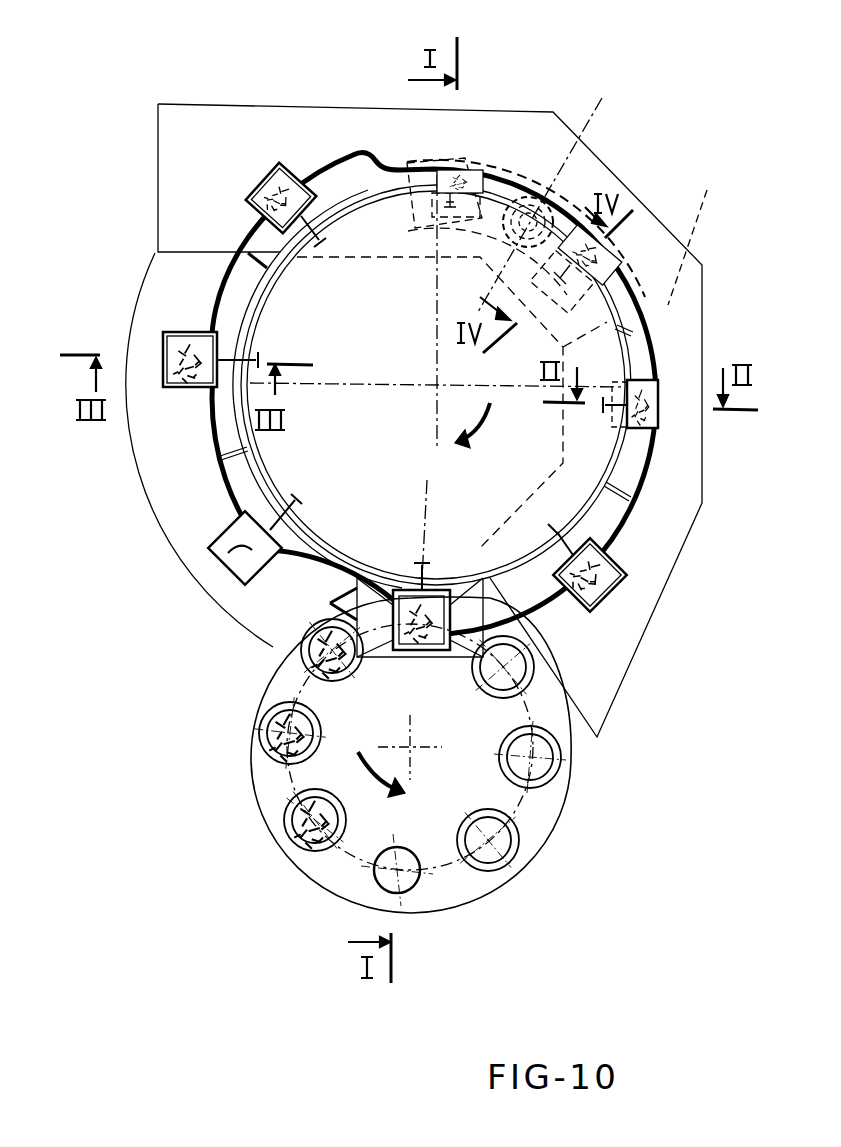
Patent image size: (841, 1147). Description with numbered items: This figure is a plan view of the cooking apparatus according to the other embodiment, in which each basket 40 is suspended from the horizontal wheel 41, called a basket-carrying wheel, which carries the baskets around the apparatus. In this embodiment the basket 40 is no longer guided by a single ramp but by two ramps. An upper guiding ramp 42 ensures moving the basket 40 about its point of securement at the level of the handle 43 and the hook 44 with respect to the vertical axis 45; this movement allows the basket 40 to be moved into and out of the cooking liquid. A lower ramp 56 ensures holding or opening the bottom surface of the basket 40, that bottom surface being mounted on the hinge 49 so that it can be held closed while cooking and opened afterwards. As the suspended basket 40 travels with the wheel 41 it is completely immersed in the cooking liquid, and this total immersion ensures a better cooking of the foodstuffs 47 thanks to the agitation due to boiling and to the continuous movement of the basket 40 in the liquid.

The lower ramp 56 is at (313, 167).
The foodstuffs 47 is at (167, 347).
The horizontal wheel 41 is at (270, 447).
The upper guiding ramp 42 is at (243, 512).
The handle 43 is at (238, 505).
The vertical axis 45 is at (212, 553).
The basket 40 is at (248, 583).
The hook 44 is at (243, 587).
The hinge 49 is at (705, 232).